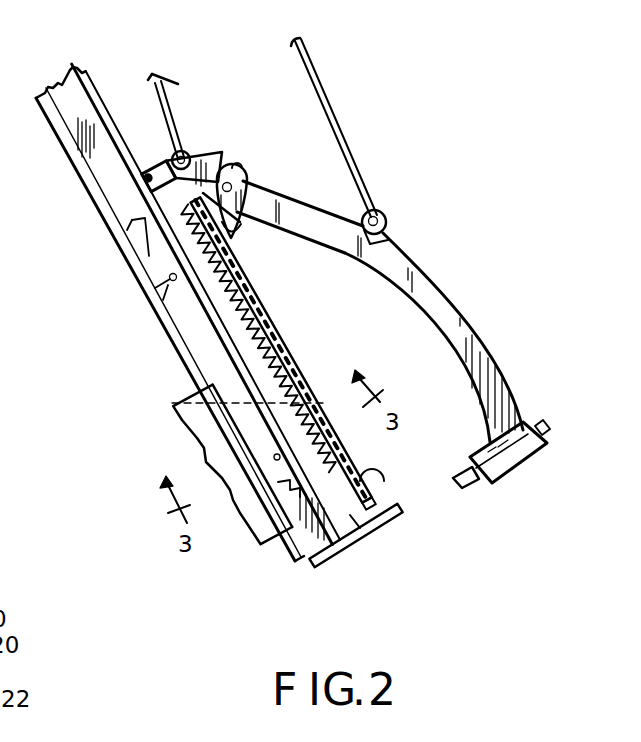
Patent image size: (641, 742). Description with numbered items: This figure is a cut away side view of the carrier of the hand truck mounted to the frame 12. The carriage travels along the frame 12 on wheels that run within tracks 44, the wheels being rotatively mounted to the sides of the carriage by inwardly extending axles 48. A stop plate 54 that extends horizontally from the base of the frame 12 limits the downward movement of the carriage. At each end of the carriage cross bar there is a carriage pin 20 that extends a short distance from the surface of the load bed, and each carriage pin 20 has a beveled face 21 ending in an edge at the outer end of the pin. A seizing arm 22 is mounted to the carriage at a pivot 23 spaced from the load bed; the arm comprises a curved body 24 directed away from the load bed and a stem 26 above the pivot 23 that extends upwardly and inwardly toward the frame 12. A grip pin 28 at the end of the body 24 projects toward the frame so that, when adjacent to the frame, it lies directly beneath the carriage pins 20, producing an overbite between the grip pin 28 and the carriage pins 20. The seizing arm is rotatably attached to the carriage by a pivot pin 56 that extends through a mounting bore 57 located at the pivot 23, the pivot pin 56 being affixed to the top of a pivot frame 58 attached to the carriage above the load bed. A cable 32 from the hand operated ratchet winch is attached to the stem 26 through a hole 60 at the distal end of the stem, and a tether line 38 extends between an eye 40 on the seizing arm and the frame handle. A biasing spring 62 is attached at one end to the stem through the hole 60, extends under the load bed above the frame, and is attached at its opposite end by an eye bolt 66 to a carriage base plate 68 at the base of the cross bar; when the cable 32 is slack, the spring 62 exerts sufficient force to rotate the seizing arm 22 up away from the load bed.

The frame 12 is at (76, 207).
The carriage pin 20 is at (346, 470).
The beveled face 21 is at (384, 470).
The seizing arm 22 is at (518, 408).
The pivot 23 is at (236, 164).
The curved body 24 is at (422, 267).
The stem 26 is at (193, 142).
The grip pin 28 is at (467, 500).
The cable 32 is at (178, 97).
The tether line 38 is at (362, 172).
The eye 40 is at (400, 220).
The track 44 is at (52, 135).
The axle 48 is at (157, 292).
The stop plate 54 is at (390, 525).
The pivot pin 56 is at (245, 172).
The mounting bore 57 is at (253, 193).
The pivot frame 58 is at (233, 232).
The hole 60 is at (163, 153).
The biasing spring 62 is at (265, 335).
The eye bolt 66 is at (300, 552).
The carriage base plate 68 is at (358, 520).